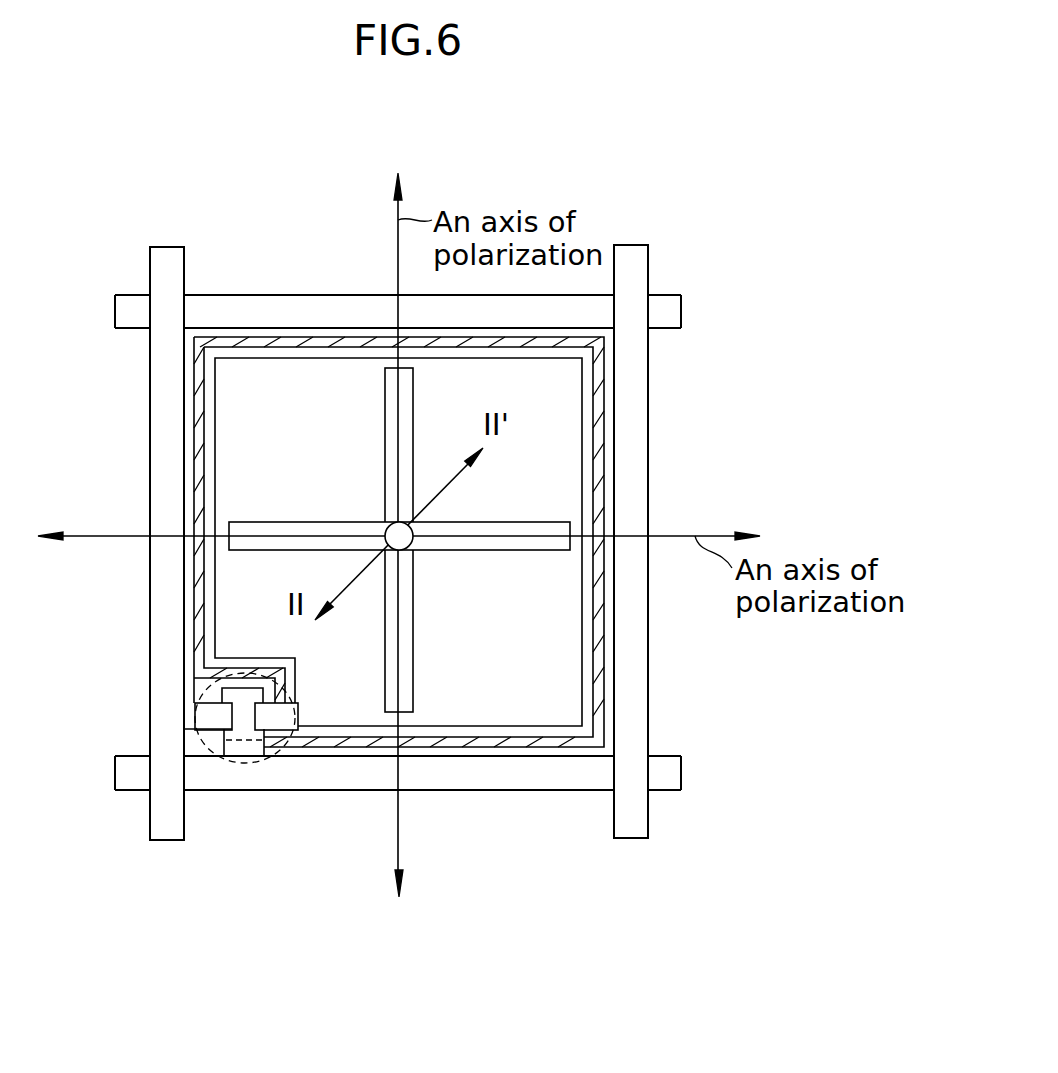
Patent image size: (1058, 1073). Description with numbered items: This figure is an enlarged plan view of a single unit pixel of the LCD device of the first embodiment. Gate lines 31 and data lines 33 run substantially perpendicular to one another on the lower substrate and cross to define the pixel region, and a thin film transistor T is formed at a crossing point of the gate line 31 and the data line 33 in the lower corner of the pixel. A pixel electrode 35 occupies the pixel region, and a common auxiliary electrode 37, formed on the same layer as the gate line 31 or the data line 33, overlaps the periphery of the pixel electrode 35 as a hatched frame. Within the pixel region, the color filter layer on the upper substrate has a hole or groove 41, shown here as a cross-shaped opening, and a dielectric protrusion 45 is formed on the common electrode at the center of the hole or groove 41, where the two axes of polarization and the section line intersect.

The gate line 31 is at (518, 790).
The data line 33 is at (648, 613).
The pixel electrode 35 is at (567, 408).
The common auxiliary electrode 37 is at (600, 510).
The hole or groove 41 is at (518, 542).
The dielectric protrusion 45 is at (388, 526).
The thin film transistor T is at (250, 763).